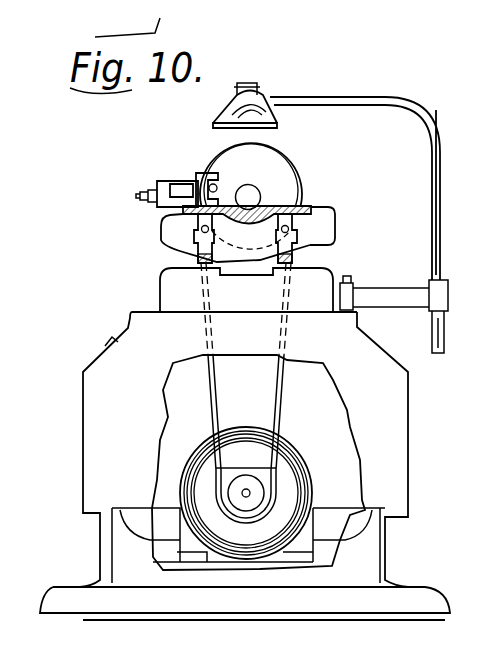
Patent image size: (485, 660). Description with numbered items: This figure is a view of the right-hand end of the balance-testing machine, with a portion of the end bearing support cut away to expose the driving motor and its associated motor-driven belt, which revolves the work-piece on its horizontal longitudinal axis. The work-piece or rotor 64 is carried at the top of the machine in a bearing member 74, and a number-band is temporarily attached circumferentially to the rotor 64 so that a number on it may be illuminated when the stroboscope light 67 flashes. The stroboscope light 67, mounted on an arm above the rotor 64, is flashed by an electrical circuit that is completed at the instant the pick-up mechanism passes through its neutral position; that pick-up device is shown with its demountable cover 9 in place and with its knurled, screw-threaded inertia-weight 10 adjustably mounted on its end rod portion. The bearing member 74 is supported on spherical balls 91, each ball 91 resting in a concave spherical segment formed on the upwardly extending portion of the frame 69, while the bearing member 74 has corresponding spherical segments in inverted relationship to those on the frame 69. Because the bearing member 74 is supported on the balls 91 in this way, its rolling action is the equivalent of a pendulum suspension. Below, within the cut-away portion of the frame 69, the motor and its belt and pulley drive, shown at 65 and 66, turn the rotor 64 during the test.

The demountable cover 9 is at (160, 178).
The inertia-weight 10 is at (235, 198).
The work-piece or rotor 64 is at (287, 178).
The belt 65 is at (282, 410).
The pulley 66 is at (283, 465).
The stroboscope light 67 is at (230, 108).
The frame 69 is at (103, 386).
The bearing member 74 is at (327, 207).
The ball 91 is at (280, 228).